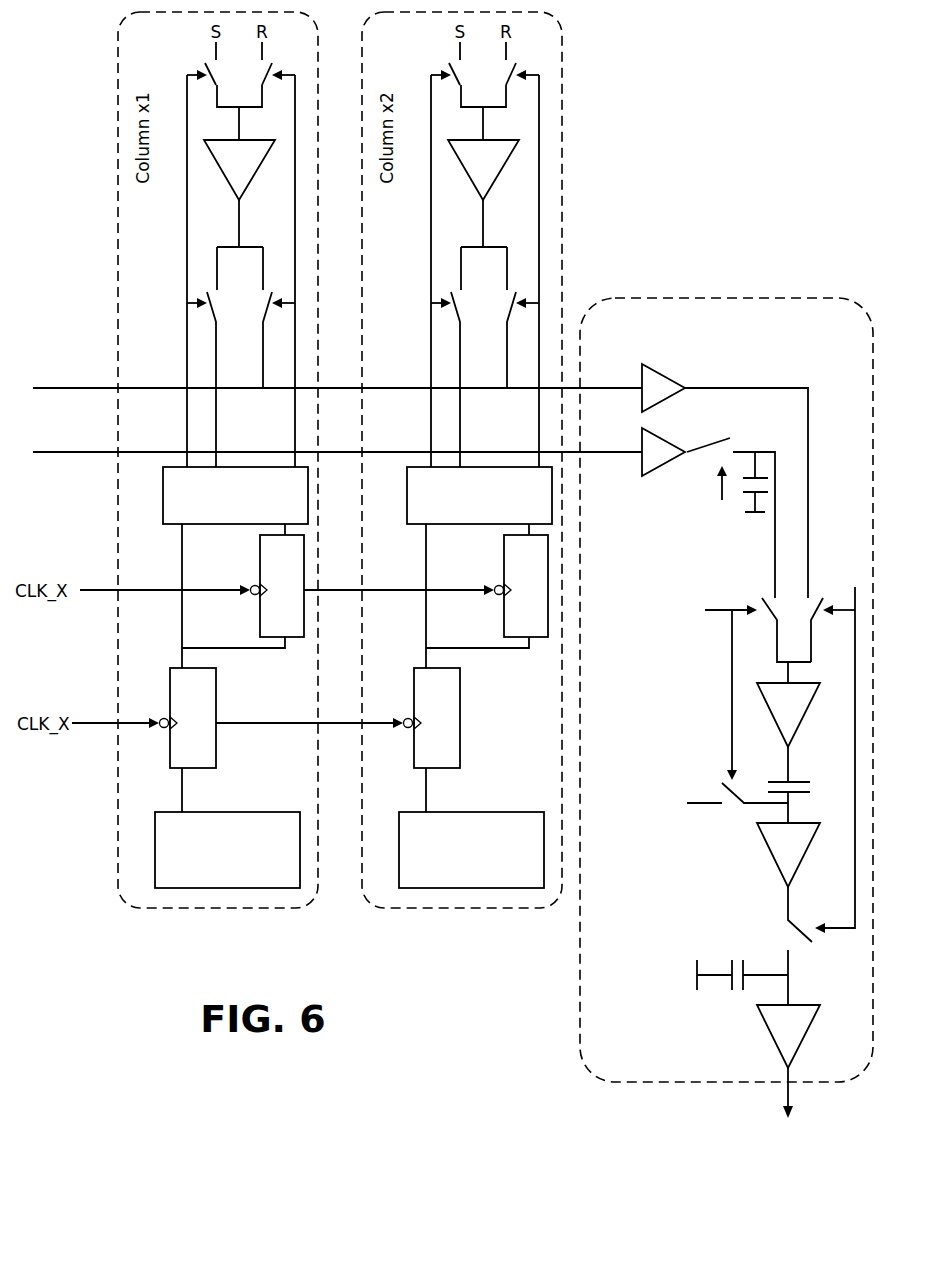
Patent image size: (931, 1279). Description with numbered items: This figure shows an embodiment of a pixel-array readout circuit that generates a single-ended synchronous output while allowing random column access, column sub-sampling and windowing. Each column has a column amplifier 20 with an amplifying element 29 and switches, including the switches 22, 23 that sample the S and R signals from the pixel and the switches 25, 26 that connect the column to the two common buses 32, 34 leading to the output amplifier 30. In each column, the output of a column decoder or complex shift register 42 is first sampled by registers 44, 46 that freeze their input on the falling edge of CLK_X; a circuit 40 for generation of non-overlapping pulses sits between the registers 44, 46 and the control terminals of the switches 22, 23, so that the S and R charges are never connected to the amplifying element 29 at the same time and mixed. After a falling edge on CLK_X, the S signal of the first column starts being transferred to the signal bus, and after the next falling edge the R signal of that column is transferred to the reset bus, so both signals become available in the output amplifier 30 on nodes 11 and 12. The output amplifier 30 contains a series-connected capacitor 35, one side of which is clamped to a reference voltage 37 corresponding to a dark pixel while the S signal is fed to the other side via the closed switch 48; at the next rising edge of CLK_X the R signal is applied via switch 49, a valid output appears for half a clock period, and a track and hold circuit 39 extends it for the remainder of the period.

The node 11 is at (711, 511).
The node 12 is at (725, 478).
The column amplifier 20 is at (130, 199).
The switch 22 is at (269, 62).
The switch 23 is at (193, 62).
The switch 25 is at (268, 315).
The switch 26 is at (204, 315).
The amplifying element 29 is at (240, 170).
The output amplifier 30 is at (652, 320).
The bus 32 is at (70, 456).
The bus 34 is at (104, 386).
The series-connected capacitor 35 is at (800, 777).
The reference voltage 37 is at (655, 813).
The track and hold circuit 39 is at (735, 998).
The circuit for generation of non-overlapping pulses 40 is at (173, 466).
The column decoder or complex shift register 42 is at (175, 811).
The register 44 is at (180, 667).
The register 46 is at (258, 570).
The switch 48 is at (757, 597).
The switch 49 is at (826, 585).